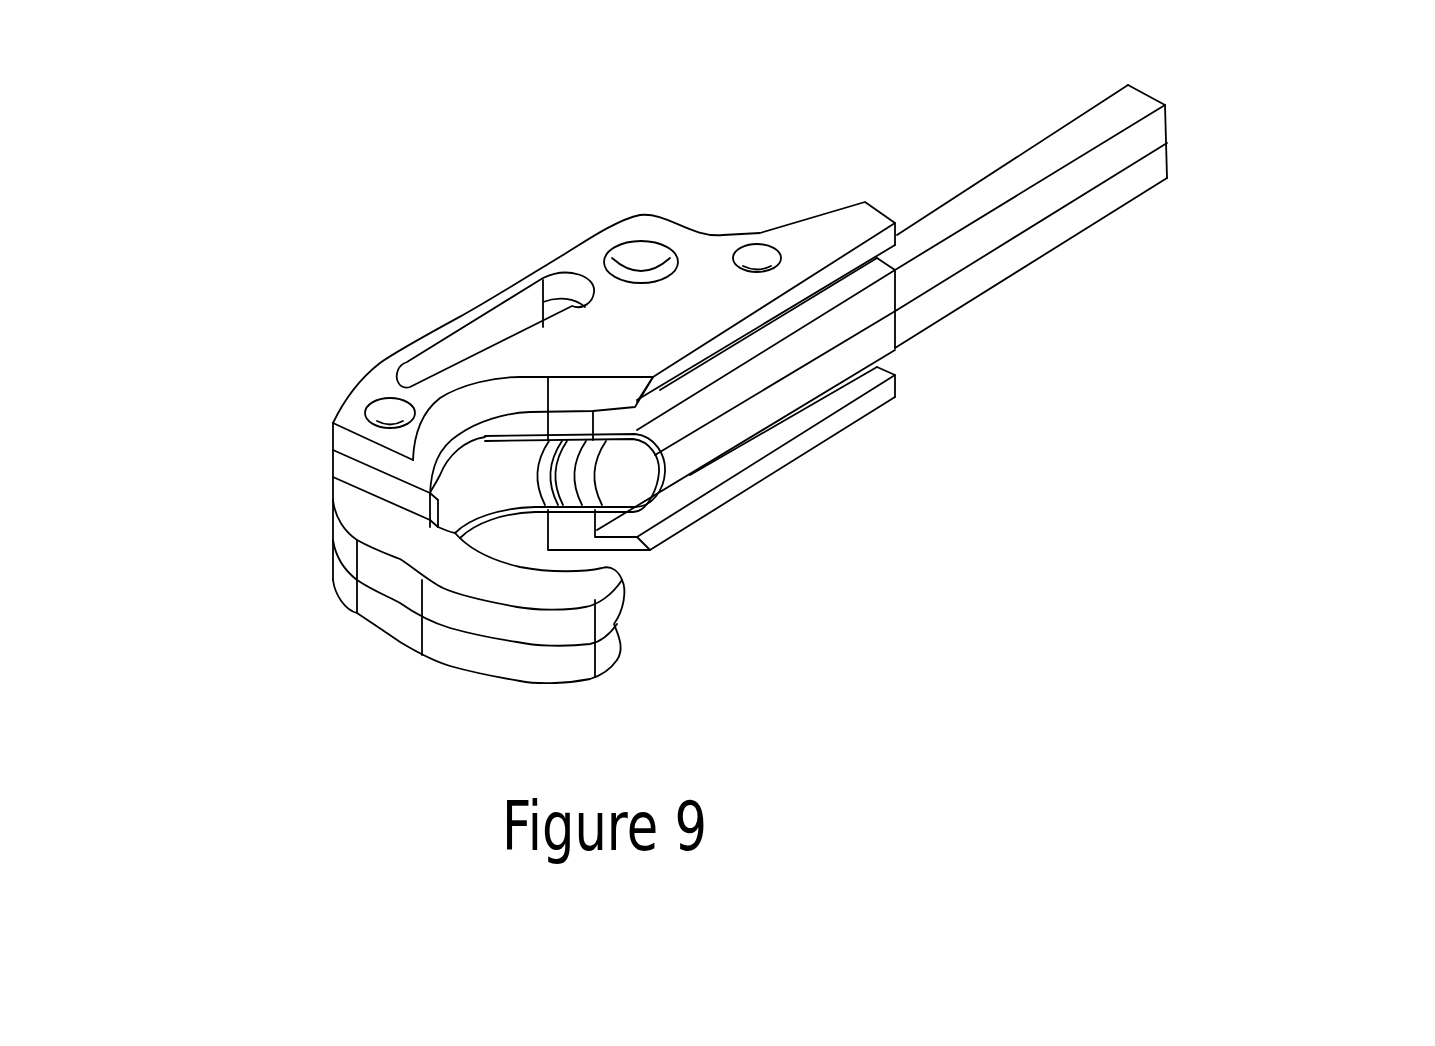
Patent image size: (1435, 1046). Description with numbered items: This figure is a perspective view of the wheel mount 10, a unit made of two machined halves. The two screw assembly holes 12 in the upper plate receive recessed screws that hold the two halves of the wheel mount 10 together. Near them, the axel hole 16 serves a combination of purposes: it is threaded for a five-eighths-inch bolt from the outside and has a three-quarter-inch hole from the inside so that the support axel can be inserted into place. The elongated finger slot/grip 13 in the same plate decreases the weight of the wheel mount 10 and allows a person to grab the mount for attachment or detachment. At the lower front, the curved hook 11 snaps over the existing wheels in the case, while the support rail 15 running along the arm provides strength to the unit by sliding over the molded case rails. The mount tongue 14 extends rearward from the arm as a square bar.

The wheel mount 10 is at (242, 196).
The hook 11 is at (611, 645).
The screw assembly hole 12 is at (387, 413).
The finger slot/grip 13 is at (473, 330).
The mount tongue 14 is at (1150, 133).
The support rail 15 is at (770, 445).
The axel hole 16 is at (640, 252).